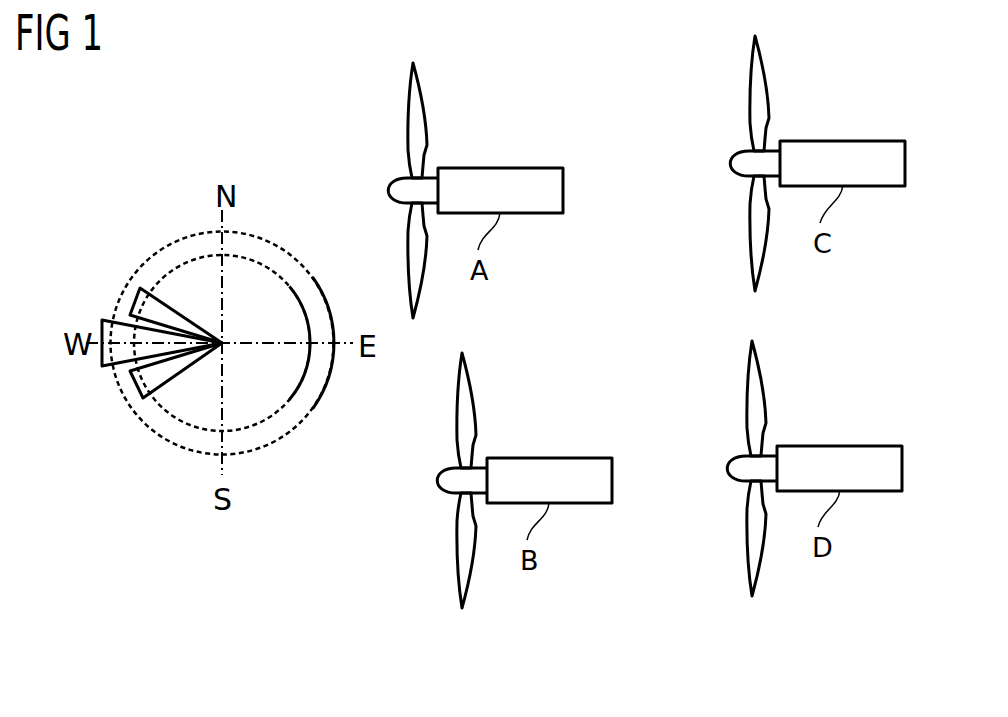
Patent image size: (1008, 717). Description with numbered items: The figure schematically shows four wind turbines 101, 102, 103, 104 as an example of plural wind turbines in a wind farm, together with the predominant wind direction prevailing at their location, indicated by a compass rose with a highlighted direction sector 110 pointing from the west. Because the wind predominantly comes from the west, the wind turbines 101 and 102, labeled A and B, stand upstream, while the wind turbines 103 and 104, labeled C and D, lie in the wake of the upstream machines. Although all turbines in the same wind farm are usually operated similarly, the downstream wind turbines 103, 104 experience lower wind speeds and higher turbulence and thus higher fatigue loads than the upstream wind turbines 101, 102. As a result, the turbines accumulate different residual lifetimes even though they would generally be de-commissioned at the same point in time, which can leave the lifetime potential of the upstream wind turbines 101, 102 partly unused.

The wind turbine 101 is at (500, 168).
The wind turbine 102 is at (549, 458).
The wind turbine 103 is at (843, 142).
The wind turbine 104 is at (840, 447).
The wind direction sector 110 is at (102, 365).